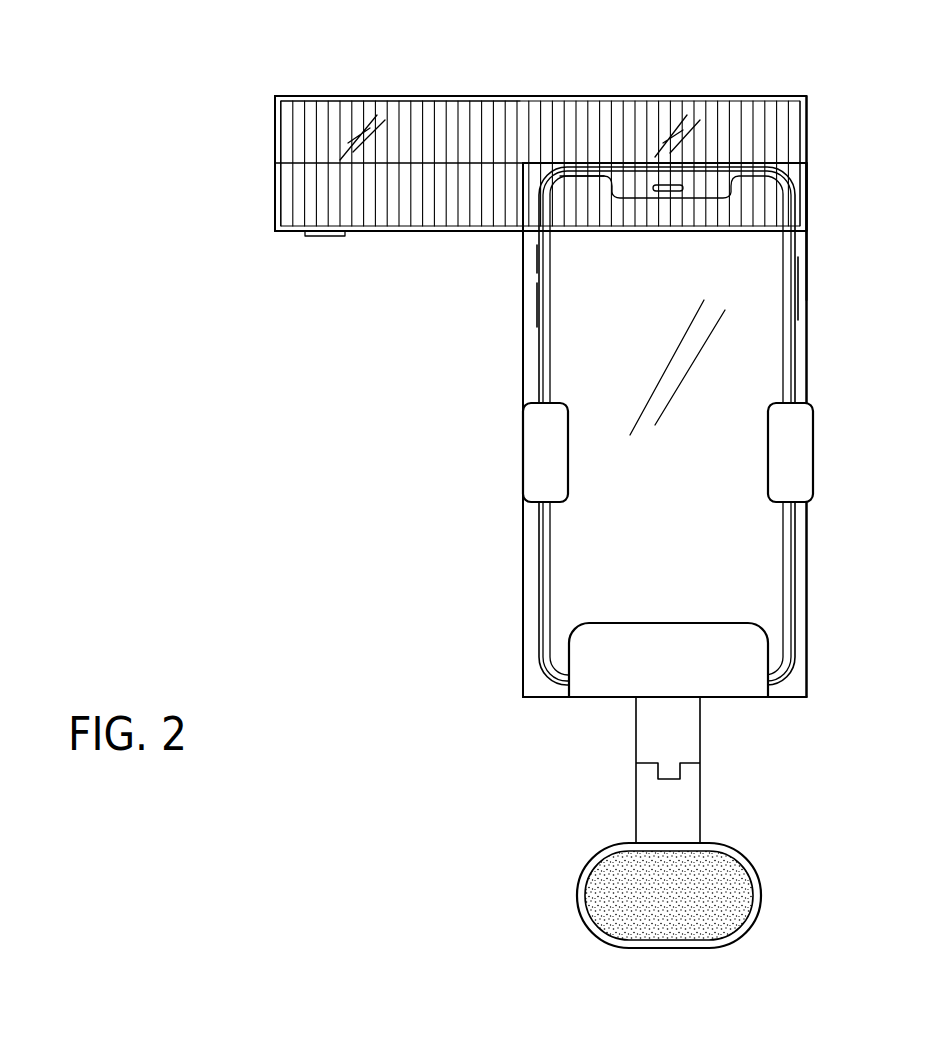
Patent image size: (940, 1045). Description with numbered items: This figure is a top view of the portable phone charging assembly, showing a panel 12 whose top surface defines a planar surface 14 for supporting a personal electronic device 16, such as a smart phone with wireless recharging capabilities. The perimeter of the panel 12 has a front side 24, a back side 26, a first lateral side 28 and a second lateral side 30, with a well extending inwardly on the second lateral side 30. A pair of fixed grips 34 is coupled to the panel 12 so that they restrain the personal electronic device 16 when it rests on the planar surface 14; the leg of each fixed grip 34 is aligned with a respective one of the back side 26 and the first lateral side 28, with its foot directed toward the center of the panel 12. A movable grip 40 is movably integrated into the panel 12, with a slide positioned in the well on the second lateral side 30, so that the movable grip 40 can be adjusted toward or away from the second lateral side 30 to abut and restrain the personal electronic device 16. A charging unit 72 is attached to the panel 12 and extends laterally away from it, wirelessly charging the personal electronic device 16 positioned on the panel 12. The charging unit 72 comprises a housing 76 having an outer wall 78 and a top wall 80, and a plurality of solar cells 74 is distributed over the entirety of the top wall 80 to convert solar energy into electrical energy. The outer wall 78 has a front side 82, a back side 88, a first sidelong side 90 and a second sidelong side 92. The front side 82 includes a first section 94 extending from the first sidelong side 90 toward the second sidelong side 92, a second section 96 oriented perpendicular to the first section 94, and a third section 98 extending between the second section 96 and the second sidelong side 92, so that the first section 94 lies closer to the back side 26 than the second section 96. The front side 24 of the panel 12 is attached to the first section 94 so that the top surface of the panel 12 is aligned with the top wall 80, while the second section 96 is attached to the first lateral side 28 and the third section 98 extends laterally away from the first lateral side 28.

The panel 12 is at (806, 698).
The planar surface 14 is at (534, 316).
The personal electronic device 16 is at (768, 280).
The front side 24 is at (786, 186).
The back side 26 is at (544, 698).
The first lateral side 28 is at (523, 541).
The second lateral side 30 is at (807, 352).
The fixed grips 34 is at (551, 463).
The movable grip 40 is at (793, 468).
The charging unit 72 is at (452, 86).
The solar cells 74 is at (553, 128).
The housing 76 is at (275, 232).
The outer wall 78 is at (392, 232).
The top wall 80 is at (298, 96).
The front side 82 is at (443, 232).
The back side 88 is at (346, 97).
The first sidelong side 90 is at (807, 131).
The second sidelong side 92 is at (275, 172).
The first section 94 is at (797, 218).
The second section 96 is at (533, 198).
The third section 98 is at (365, 236).